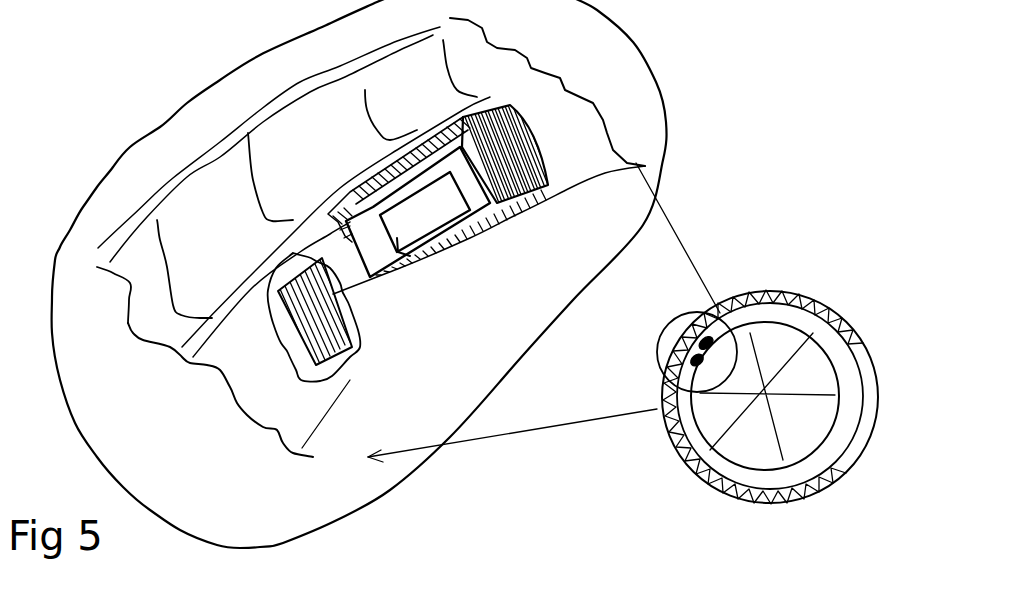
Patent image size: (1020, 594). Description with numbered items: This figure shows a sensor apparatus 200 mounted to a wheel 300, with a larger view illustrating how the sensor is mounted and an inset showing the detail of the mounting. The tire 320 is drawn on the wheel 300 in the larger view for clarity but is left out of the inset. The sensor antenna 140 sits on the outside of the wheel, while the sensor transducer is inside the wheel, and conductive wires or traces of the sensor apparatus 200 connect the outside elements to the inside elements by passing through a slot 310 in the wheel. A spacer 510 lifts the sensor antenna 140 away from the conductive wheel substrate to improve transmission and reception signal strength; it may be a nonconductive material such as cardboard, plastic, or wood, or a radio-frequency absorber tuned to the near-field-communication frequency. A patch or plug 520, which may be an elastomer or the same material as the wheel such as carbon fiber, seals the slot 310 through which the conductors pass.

The sensor antenna 140 is at (468, 217).
The sensor apparatus 200 is at (350, 290).
The wheel 300 is at (571, 189).
The slot 310 is at (316, 288).
The tire 320 is at (872, 329).
The spacer 510 is at (533, 149).
The patch or plug 520 is at (313, 381).